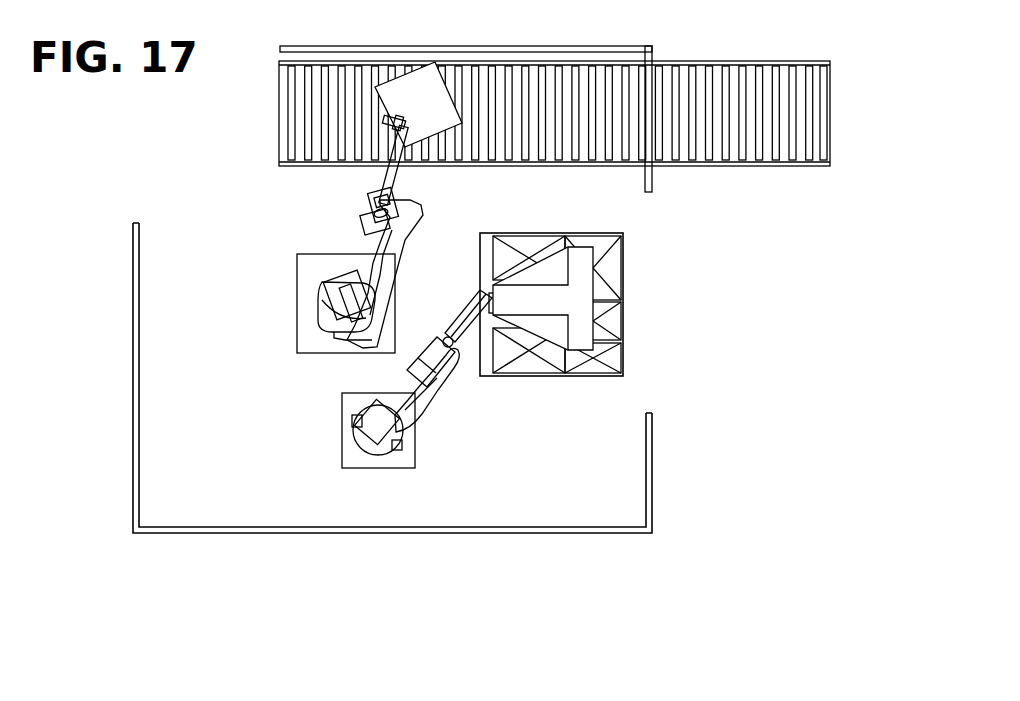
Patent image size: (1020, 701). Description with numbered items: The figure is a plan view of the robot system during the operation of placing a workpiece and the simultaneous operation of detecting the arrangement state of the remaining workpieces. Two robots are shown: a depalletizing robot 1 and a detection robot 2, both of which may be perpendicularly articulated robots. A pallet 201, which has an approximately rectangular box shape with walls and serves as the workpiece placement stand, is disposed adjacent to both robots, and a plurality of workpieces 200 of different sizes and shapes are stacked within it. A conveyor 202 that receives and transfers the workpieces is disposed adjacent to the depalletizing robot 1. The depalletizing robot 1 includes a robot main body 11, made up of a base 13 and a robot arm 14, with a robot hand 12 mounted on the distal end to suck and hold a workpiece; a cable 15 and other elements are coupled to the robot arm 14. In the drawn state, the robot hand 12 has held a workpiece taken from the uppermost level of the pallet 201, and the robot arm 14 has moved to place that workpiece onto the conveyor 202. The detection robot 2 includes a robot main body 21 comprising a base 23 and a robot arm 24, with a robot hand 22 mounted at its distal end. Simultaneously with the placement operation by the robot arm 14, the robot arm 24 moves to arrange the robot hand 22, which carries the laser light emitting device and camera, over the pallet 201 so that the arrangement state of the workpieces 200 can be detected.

The depalletizing robot 1 is at (348, 234).
The detection robot 2 is at (384, 384).
The robot main body 11 is at (392, 245).
The robot hand 12 is at (417, 85).
The base 13 is at (302, 297).
The robot arm 14 is at (380, 275).
The cable 15 is at (422, 208).
The robot main body 21 is at (454, 388).
The robot hand 22 is at (575, 257).
The base 23 is at (340, 396).
The robot arm 24 is at (427, 417).
The workpiece 200 is at (612, 270).
The pallet 201 is at (606, 285).
The conveyor 202 is at (745, 168).